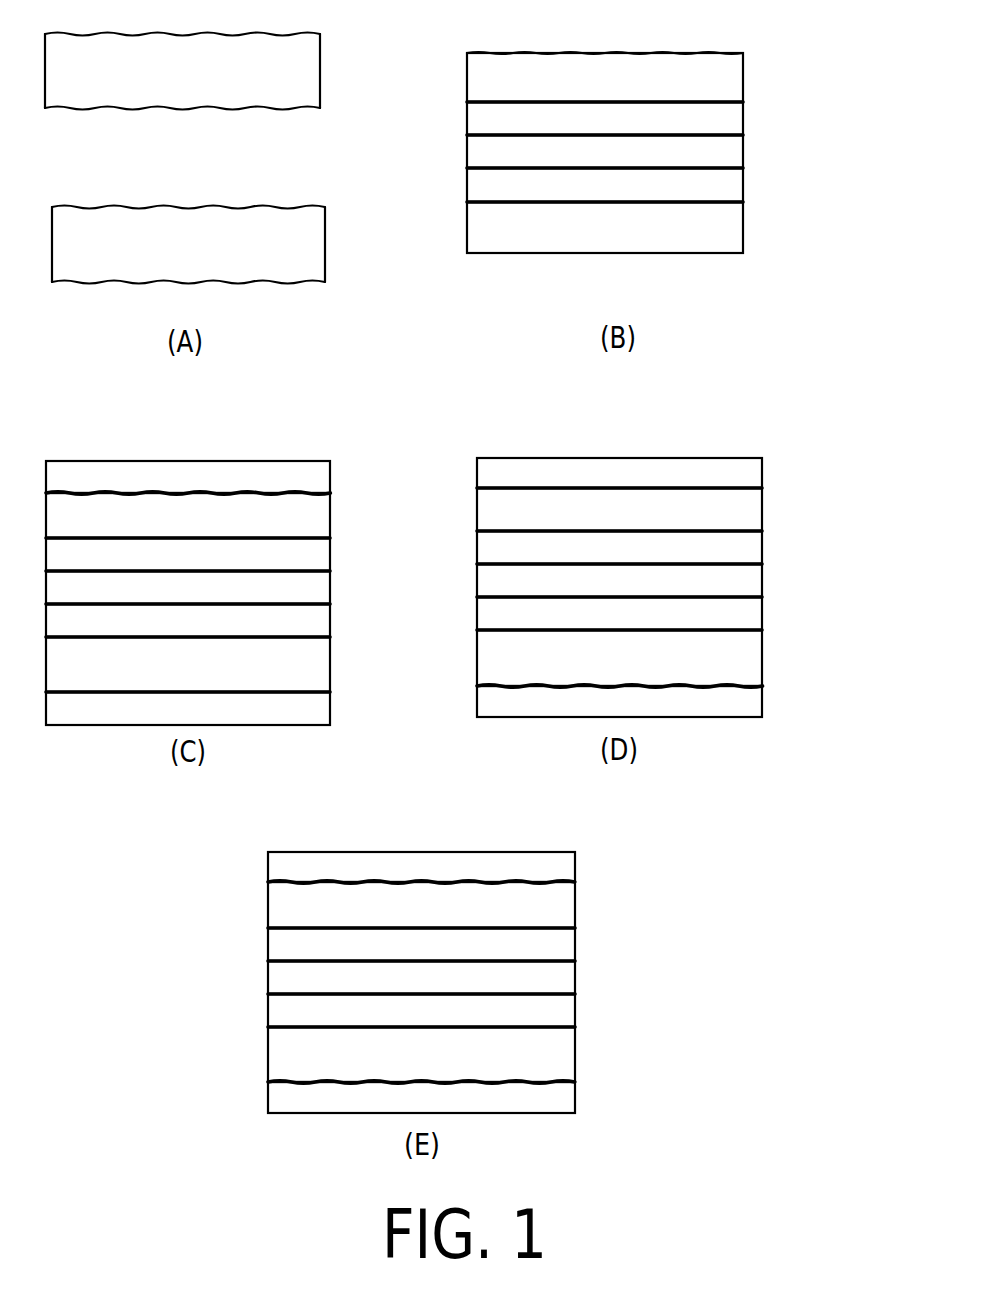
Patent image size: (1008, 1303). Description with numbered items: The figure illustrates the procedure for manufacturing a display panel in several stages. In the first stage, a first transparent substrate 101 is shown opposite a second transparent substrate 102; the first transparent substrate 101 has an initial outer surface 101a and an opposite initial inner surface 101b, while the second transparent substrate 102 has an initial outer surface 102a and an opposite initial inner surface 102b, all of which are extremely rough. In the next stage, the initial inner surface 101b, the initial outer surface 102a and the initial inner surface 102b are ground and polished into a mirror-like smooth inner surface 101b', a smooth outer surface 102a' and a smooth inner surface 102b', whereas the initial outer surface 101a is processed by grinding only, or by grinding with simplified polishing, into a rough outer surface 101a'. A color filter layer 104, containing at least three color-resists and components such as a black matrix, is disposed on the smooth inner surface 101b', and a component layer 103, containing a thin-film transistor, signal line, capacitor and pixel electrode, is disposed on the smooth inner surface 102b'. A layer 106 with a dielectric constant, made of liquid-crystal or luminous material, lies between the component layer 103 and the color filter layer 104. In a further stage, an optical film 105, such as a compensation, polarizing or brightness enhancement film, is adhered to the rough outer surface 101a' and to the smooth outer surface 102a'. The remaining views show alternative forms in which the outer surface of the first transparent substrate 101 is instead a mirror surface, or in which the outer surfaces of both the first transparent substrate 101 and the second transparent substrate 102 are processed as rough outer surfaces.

The first transparent substrate 101 is at (403, 481).
The second transparent substrate 102 is at (404, 642).
The component layer 103 is at (404, 597).
The color filter layer 104 is at (404, 529).
The optical film 105 is at (404, 785).
The layer with a dielectric constant 106 is at (404, 564).
The initial outer surface 101a is at (219, 18).
The initial inner surface 101b is at (219, 123).
The initial outer surface 102a is at (226, 298).
The initial inner surface 102b is at (226, 188).
The rough outer surface 101a' is at (446, 450).
The smooth inner surface 101b' is at (444, 527).
The smooth outer surface 102a' is at (446, 686).
The smooth inner surface 102b' is at (444, 598).